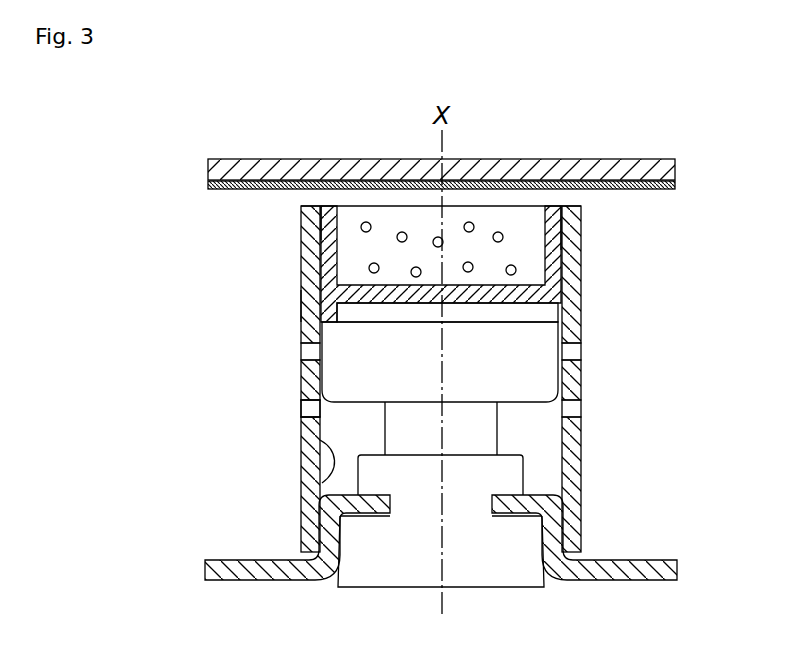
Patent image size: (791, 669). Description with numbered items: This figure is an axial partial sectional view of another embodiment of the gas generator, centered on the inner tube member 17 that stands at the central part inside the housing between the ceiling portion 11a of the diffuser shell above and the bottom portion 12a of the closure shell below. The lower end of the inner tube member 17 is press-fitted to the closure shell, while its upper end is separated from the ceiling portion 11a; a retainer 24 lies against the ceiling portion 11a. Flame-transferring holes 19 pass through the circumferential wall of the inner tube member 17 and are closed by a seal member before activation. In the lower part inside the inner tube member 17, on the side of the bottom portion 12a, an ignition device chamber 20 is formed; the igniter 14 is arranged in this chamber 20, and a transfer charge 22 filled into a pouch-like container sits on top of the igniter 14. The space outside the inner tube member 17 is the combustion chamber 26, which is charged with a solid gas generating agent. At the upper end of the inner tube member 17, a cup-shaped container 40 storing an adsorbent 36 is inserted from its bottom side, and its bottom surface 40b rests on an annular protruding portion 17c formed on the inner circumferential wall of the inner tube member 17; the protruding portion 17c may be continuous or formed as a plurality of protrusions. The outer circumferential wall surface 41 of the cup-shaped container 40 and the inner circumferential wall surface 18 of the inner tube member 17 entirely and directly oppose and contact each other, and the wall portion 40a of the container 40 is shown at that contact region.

The ceiling portion 11a is at (270, 175).
The retainer 24 is at (240, 189).
The side wall of housing 40a is at (333, 205).
The adsorbent 36 is at (403, 232).
The inner tube member 17 is at (571, 452).
The annular protruding portion 17c is at (300, 312).
The flame-transferring holes 19 is at (308, 407).
The inner circumferential wall surface 18 is at (322, 483).
The cup-shaped container 40 is at (557, 262).
The outer circumferential wall surface 41 is at (570, 237).
The bottom surface 40b is at (492, 303).
The transfer charge 22 is at (395, 375).
The ignition device chamber 20 is at (548, 449).
The combustion chamber 26 is at (655, 413).
The bottom portion 12a is at (617, 573).
The igniter 14 is at (385, 569).